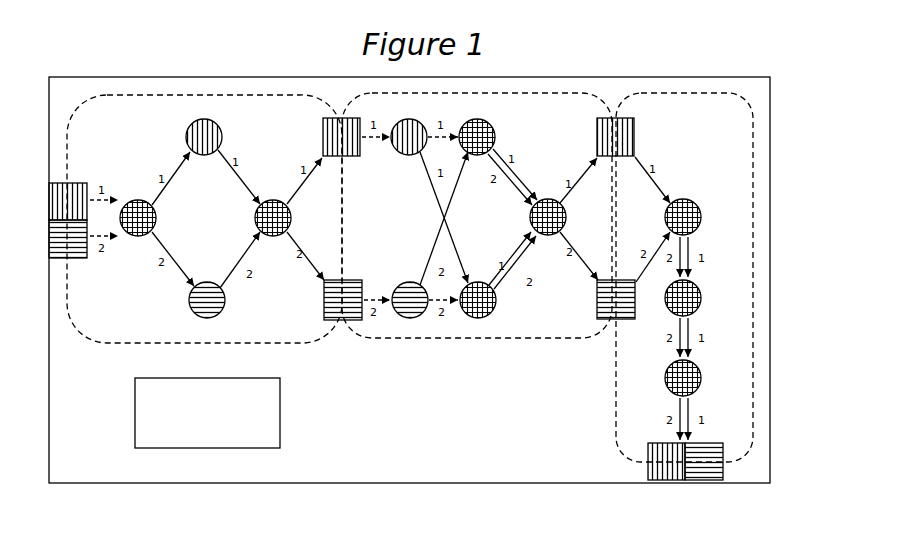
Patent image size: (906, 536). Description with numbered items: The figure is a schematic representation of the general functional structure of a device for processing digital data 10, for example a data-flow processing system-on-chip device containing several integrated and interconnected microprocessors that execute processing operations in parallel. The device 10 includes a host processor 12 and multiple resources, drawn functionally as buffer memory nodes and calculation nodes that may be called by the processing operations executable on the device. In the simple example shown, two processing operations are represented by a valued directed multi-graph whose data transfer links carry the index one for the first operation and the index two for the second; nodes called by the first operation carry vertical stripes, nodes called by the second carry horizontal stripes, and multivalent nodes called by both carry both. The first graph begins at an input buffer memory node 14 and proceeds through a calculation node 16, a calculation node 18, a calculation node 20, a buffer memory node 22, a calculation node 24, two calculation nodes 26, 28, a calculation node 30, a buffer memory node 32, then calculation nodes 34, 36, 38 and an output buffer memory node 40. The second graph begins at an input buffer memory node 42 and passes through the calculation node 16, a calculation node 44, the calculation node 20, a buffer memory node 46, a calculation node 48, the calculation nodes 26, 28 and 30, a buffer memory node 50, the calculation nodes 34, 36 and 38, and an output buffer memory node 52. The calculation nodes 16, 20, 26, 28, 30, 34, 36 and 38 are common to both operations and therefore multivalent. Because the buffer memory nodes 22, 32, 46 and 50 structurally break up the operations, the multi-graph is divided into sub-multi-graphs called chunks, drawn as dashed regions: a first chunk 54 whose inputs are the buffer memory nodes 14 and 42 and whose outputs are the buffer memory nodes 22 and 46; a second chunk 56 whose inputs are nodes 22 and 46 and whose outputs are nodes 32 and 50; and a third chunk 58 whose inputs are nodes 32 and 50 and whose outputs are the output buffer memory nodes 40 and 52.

The device for processing digital data 10 is at (409, 299).
The host processor 12 is at (269, 420).
The input buffer memory node 14 is at (73, 183).
The calculation node 16 is at (155, 222).
The calculation node 18 is at (222, 137).
The calculation node 20 is at (256, 218).
The buffer memory node 22 is at (323, 148).
The calculation node 24 is at (405, 155).
The calculation node 26 is at (495, 135).
The calculation node 28 is at (494, 306).
The calculation node 30 is at (566, 220).
The buffer memory node 32 is at (634, 136).
The calculation node 34 is at (701, 217).
The calculation node 36 is at (701, 298).
The calculation node 38 is at (701, 378).
The output buffer memory node 40 is at (703, 450).
The input buffer memory node 42 is at (80, 258).
The calculation node 44 is at (218, 312).
The buffer memory node 46 is at (324, 296).
The calculation node 48 is at (398, 290).
The buffer memory node 50 is at (597, 298).
The output buffer memory node 52 is at (650, 460).
The first chunk 54 is at (300, 343).
The second chunk 56 is at (462, 338).
The third chunk 58 is at (616, 390).